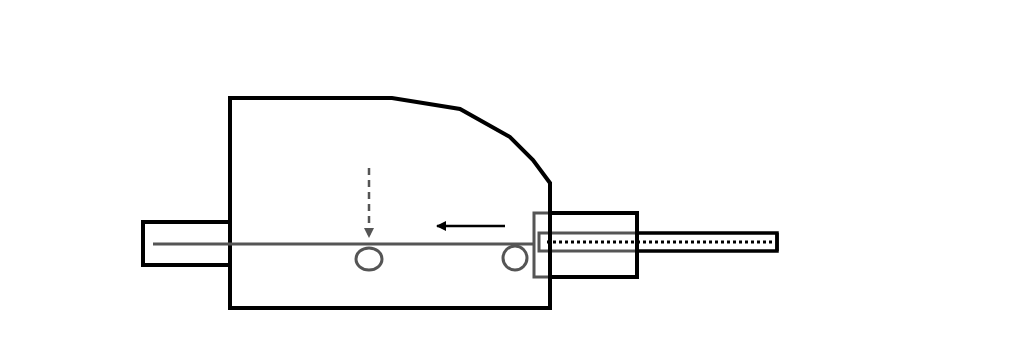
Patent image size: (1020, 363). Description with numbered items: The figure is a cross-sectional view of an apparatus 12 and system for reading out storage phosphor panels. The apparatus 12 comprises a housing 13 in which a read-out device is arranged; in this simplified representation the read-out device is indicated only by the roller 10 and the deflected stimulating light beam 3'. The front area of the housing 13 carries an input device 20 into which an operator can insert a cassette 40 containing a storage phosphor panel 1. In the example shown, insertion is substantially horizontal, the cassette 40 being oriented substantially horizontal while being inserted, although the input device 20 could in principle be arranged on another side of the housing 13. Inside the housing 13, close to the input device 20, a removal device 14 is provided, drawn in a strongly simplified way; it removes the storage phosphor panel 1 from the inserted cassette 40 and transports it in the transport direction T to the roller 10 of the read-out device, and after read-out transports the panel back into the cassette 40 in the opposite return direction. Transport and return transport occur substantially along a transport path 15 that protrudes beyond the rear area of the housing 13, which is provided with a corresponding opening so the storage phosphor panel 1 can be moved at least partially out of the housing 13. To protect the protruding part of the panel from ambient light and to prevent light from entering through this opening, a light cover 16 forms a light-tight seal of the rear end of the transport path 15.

The storage phosphor panel 1 is at (690, 239).
The deflected stimulating light beam 3' is at (395, 190).
The roller 10 is at (357, 265).
The apparatus 12 is at (530, 82).
The housing 13 is at (305, 97).
The removal device 14 is at (503, 263).
The transport path 15 is at (292, 242).
The light cover 16 is at (169, 221).
The input device 20 is at (612, 212).
The cassette 40 is at (767, 231).